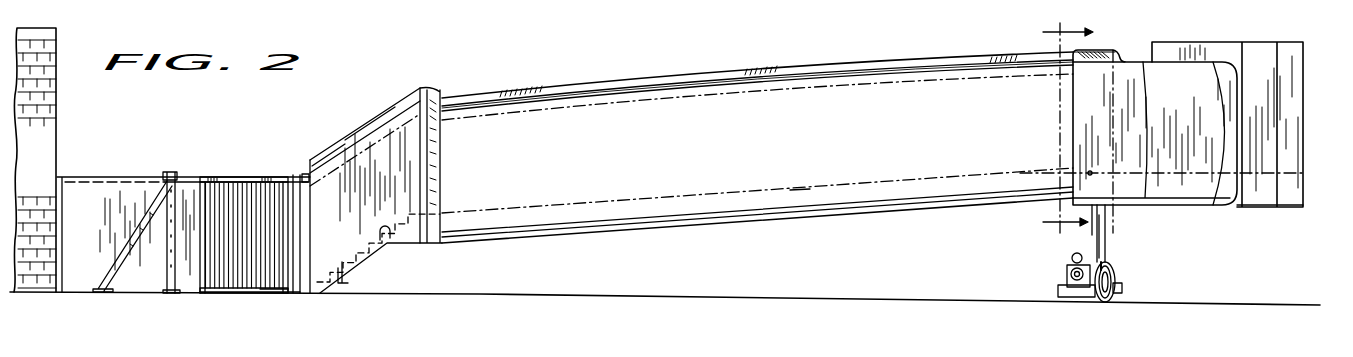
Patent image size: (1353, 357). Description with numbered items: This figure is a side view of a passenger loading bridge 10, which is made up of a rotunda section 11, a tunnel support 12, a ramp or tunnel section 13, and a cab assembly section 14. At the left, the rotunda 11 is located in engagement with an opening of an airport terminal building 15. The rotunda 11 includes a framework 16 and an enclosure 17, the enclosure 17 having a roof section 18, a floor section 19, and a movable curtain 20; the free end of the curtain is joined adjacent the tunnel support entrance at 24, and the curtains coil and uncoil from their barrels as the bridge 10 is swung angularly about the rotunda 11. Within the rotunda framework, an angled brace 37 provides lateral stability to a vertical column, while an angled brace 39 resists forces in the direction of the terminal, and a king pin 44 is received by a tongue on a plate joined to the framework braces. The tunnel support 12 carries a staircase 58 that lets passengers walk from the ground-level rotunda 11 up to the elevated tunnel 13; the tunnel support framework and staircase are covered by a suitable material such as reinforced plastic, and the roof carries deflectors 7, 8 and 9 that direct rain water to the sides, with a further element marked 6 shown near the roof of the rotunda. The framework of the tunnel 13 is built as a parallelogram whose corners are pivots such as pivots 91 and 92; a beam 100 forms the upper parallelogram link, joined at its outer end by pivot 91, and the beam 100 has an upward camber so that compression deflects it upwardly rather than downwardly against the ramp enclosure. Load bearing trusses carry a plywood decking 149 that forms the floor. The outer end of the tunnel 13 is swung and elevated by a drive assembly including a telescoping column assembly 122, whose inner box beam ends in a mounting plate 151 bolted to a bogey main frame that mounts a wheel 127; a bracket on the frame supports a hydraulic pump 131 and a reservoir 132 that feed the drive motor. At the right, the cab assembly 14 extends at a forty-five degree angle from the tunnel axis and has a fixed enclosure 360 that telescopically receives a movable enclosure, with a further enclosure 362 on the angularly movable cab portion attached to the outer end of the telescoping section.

The post cap 6 is at (304, 175).
The deflector 7 is at (390, 100).
The deflector 8 is at (350, 125).
The deflector 9 is at (326, 148).
The passenger loading bridge 10 is at (651, 68).
The rotunda section 11 is at (250, 306).
The tunnel support 12 is at (365, 270).
The tunnel section 13 is at (674, 235).
The cab assembly section 14 is at (1235, 222).
The airport terminal building 15 is at (57, 101).
The framework 16 is at (191, 158).
The enclosure 17 is at (240, 292).
The roof section 18 is at (257, 180).
The floor section 19 is at (266, 292).
The movable curtain 20 is at (216, 195).
The tunnel support entrance 24 is at (106, 185).
The angled brace 37 is at (178, 280).
The angled brace 39 is at (150, 200).
The king pin 44 is at (245, 177).
The staircase 58 is at (389, 241).
The pivot 91 is at (1090, 60).
The pivot 92 is at (1092, 206).
The beam 100 is at (850, 66).
The telescoping column assembly 122 is at (1107, 222).
The wheel 127 is at (1115, 270).
The hydraulic pump 131 is at (1072, 258).
The reservoir 132 is at (1070, 276).
The decking 149 is at (805, 190).
The mounting plate 151 is at (1106, 250).
The fixed enclosure 360 is at (1157, 70).
The enclosure 362 is at (1290, 56).